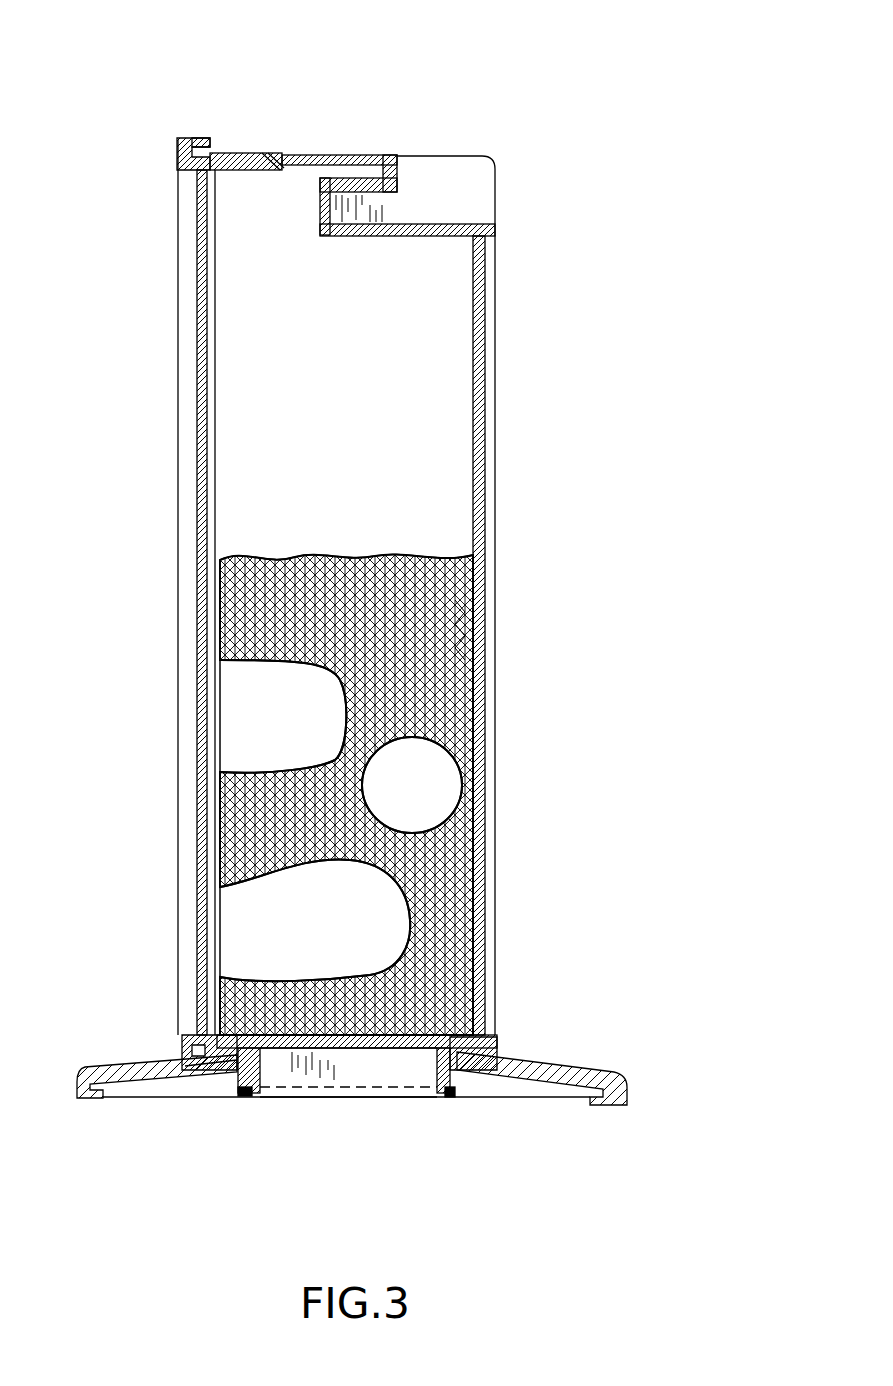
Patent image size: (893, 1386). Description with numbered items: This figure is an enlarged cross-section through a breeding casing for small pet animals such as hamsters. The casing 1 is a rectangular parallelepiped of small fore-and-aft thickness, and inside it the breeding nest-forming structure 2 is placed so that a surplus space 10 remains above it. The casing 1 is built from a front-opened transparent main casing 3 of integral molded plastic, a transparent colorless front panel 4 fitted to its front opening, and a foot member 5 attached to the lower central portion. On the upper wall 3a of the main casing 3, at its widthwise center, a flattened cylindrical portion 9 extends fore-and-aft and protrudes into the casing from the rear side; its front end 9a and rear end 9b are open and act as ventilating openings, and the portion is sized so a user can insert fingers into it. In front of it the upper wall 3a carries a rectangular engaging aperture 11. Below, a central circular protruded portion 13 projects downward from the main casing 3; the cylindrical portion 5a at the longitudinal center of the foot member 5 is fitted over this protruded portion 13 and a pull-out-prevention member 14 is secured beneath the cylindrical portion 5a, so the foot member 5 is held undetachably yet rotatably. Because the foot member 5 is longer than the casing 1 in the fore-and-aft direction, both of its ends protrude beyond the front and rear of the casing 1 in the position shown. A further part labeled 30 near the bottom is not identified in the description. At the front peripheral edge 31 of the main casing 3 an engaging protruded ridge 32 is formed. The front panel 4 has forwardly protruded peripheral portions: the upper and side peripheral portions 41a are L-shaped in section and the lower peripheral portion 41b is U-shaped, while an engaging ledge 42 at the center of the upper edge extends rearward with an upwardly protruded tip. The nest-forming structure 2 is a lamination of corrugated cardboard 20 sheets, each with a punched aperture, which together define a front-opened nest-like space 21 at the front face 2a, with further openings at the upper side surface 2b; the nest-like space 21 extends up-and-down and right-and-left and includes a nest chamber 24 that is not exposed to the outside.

The casing 1 is at (509, 152).
The breeding nest-forming structure 2 is at (367, 555).
The front face 2a is at (220, 797).
The upper side surface 2b is at (290, 558).
The main casing 3 is at (508, 431).
The upper wall 3a is at (327, 154).
The front panel 4 is at (186, 470).
The foot member 5 is at (582, 1051).
The cylindrical portion 5a is at (458, 1071).
The flattened cylindrical portion 9 is at (356, 156).
The front end 9a is at (318, 205).
The rear end 9b is at (393, 210).
The surplus space 10 is at (358, 400).
The rectangular engaging aperture 11 is at (268, 152).
The central circular protruded portion 13 is at (452, 1080).
The pull-out-prevention member 14 is at (237, 1095).
The corrugated cardboard 20 is at (478, 652).
The nest-like space 21 is at (297, 725).
The nest chamber 24 is at (427, 802).
The bottom member 30 is at (355, 1050).
The front peripheral edge 31 is at (200, 138).
The engaging protruded ridge 32 is at (197, 1032).
The upper and right and left peripheral portions 41a is at (177, 160).
The lower peripheral portion 41b is at (183, 1045).
The engaging ledge 42 is at (256, 170).